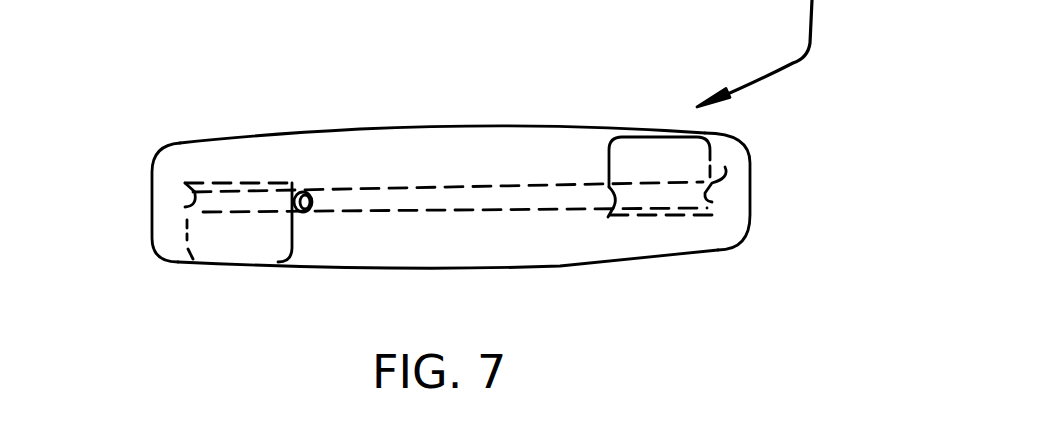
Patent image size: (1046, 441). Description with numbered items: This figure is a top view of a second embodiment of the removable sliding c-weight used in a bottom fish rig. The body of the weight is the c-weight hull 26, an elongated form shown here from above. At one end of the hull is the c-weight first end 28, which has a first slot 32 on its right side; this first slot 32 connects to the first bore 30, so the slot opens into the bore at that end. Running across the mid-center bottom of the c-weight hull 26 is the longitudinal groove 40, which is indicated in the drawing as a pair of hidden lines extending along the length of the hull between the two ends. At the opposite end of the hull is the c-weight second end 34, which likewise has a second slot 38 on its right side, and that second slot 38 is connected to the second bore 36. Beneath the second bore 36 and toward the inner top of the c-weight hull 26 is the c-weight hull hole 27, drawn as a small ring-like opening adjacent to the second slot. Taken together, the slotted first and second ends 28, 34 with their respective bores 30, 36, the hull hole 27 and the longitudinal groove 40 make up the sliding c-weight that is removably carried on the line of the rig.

The c-weight hull 26 is at (439, 261).
The c-weight hull hole 27 is at (311, 193).
The c-weight first end 28 is at (751, 175).
The first bore 30 is at (711, 202).
The first slot 32 is at (632, 136).
The c-weight second end 34 is at (160, 153).
The second bore 36 is at (191, 199).
The second slot 38 is at (267, 262).
The longitudinal groove 40 is at (467, 188).